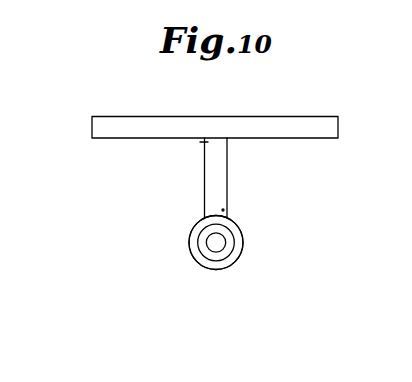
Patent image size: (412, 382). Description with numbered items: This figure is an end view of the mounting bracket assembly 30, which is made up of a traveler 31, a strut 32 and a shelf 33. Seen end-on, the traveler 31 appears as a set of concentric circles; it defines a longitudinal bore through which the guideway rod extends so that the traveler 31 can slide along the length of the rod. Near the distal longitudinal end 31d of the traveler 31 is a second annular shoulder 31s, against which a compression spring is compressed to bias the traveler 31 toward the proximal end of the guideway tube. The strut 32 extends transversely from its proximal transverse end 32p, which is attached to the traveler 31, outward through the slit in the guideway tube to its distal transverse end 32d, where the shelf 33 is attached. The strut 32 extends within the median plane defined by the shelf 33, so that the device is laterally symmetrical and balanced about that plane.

The mounting bracket assembly 30 is at (92, 86).
The shelf 33 is at (312, 122).
The strut 32 is at (227, 163).
The distal transverse end of the strut 32d is at (205, 142).
The proximal transverse end of the strut 32p is at (223, 210).
The traveler 31 is at (221, 255).
The second annular shoulder 31s is at (243, 248).
The distal longitudinal end of the traveler 31d is at (204, 262).